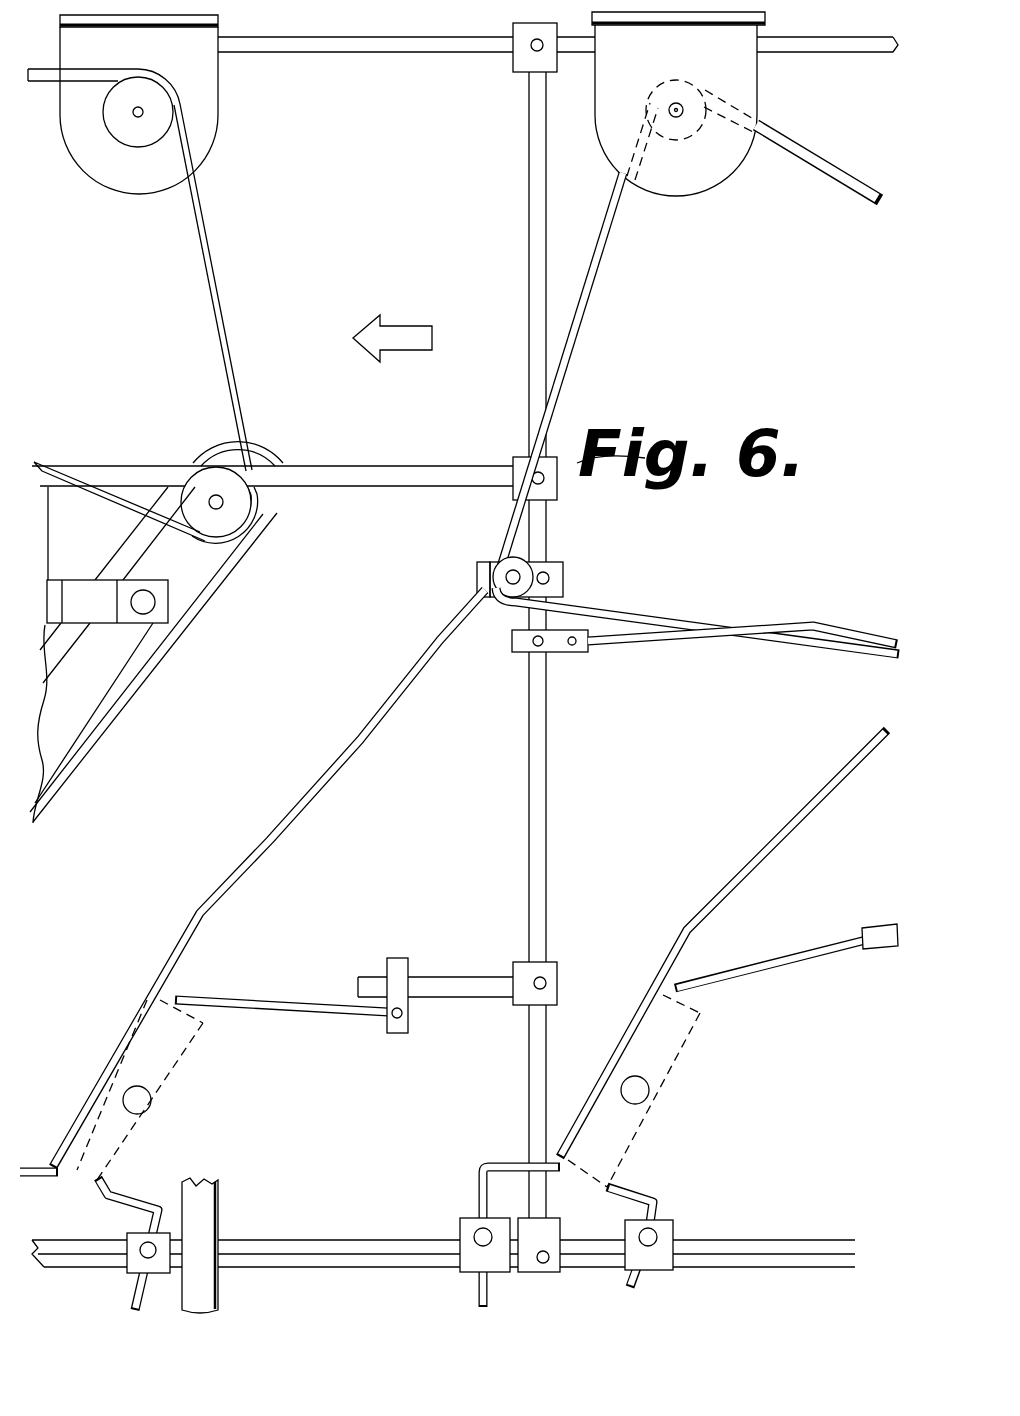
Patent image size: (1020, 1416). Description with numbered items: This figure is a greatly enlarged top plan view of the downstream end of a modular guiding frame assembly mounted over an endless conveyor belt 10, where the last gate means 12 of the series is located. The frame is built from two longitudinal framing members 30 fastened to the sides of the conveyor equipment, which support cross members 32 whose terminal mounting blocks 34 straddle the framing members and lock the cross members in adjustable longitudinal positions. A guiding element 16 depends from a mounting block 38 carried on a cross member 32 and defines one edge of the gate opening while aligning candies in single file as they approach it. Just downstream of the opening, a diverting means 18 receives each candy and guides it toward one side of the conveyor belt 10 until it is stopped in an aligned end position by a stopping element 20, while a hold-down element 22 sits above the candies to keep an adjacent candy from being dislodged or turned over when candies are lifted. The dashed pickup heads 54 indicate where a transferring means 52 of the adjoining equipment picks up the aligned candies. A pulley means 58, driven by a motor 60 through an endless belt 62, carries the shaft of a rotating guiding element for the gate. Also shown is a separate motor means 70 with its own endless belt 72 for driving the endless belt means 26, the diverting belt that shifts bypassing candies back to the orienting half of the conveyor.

The conveyor belt 10 is at (746, 545).
The gate means 12 is at (585, 600).
The guiding element 16 is at (648, 642).
The diverting means 18 is at (172, 966).
The stopping element 20 is at (133, 1203).
The hold-down element 22 is at (303, 1014).
The endless belt means 26 is at (133, 693).
The longitudinal framing members 30 is at (350, 56).
The cross members 32 is at (532, 758).
The mounting blocks 34 is at (526, 62).
The mounting block 38 is at (558, 650).
The transferring means 52 is at (202, 1222).
The pickup heads 54 is at (150, 1112).
The pulley means 58 is at (523, 567).
The motor 60 is at (681, 183).
The endless belt 62 is at (832, 173).
The motor means 70 is at (205, 143).
The endless belt 72 is at (213, 280).